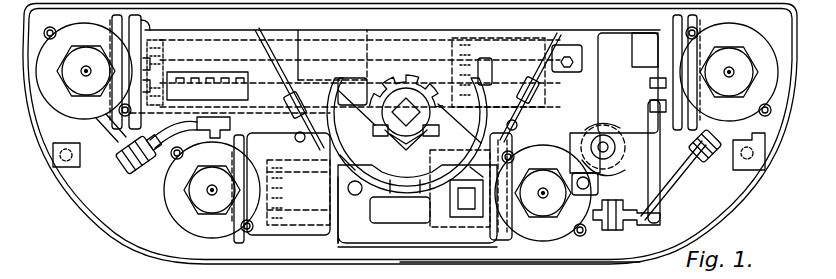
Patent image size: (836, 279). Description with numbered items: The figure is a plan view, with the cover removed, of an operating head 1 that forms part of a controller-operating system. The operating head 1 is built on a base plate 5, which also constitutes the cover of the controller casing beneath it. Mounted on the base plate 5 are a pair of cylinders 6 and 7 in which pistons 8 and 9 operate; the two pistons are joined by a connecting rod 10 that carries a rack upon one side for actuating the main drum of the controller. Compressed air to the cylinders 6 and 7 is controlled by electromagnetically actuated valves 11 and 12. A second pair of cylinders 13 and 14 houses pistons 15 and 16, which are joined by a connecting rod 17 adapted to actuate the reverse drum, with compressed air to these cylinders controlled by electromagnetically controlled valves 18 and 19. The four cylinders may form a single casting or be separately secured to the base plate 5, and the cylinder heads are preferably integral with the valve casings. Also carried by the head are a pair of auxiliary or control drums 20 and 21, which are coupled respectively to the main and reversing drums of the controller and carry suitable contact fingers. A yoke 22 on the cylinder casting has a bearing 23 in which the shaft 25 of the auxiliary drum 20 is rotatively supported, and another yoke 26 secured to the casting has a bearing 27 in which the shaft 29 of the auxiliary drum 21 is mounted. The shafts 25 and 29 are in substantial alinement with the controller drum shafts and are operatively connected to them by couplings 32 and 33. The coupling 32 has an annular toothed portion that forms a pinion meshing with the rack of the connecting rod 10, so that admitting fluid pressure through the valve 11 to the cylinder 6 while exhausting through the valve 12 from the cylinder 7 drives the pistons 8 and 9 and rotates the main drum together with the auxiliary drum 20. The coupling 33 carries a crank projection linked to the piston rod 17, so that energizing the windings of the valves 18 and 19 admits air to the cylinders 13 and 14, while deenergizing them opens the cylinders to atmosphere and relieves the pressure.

The operating head 1 is at (134, 249).
The base plate 5 is at (727, 203).
The cylinder 6 is at (158, 32).
The cylinder 7 is at (672, 26).
The piston 8 is at (166, 60).
The piston 9 is at (470, 58).
The connecting rod 10 is at (206, 64).
The electromagnetically actuated valve 11 is at (104, 37).
The electromagnetically actuated valve 12 is at (745, 35).
The cylinder 13 is at (306, 233).
The cylinder 14 is at (510, 250).
The piston 15 is at (285, 203).
The piston 16 is at (444, 228).
The connecting rod 17 is at (348, 233).
The electromagnetically controlled valve 18 is at (190, 218).
The electromagnetically controlled valve 19 is at (572, 240).
The auxiliary or control drum 20 is at (424, 200).
The auxiliary or control drum 21 is at (657, 160).
The yoke 22 is at (339, 42).
The bearing 23 is at (371, 110).
The shaft 25 is at (413, 98).
The yoke 26 is at (600, 88).
The bearing 27 is at (572, 138).
The shaft 29 is at (606, 130).
The coupling 32 is at (500, 93).
The coupling 33 is at (520, 270).